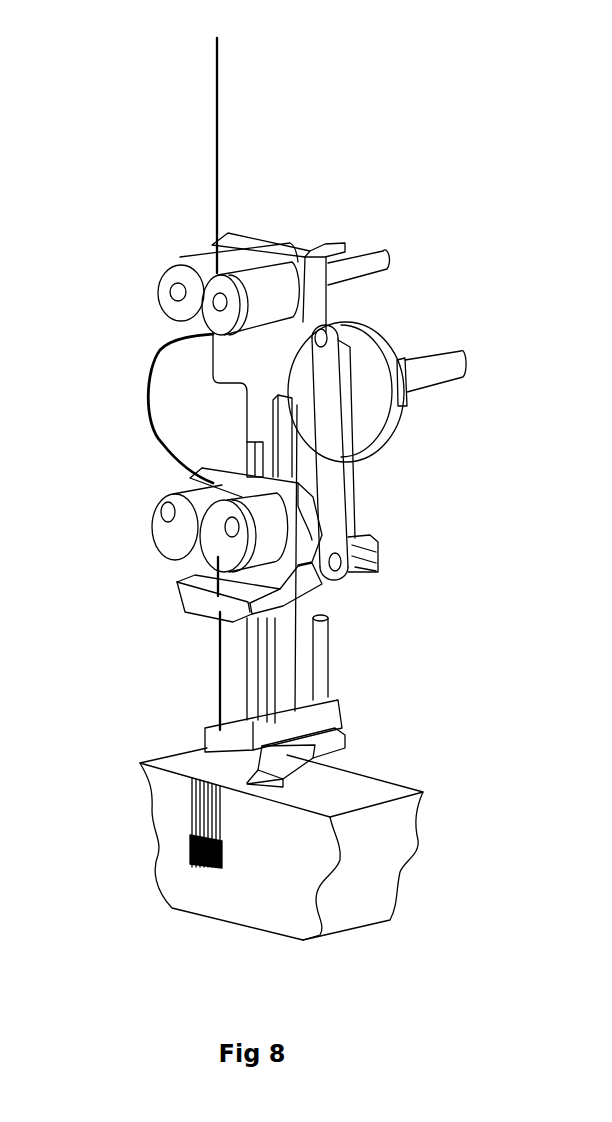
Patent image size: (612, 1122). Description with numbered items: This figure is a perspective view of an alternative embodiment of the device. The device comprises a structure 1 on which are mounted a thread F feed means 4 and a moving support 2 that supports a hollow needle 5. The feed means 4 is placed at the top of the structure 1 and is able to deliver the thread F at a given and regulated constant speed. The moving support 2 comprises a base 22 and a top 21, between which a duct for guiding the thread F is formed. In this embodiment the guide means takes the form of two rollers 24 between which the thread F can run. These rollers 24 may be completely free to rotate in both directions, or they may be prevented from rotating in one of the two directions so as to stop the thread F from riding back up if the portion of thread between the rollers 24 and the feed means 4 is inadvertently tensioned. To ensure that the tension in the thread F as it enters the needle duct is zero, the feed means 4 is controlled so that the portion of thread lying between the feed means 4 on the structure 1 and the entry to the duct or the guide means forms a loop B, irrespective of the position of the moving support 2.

The thread F is at (217, 134).
The feed means 4 is at (177, 273).
The structure 1 is at (315, 308).
The loop B is at (148, 395).
The rollers 24 is at (173, 500).
The top 21 is at (192, 573).
The base 22 is at (197, 620).
The moving support 2 is at (303, 580).
The hollow needle 5 is at (212, 720).